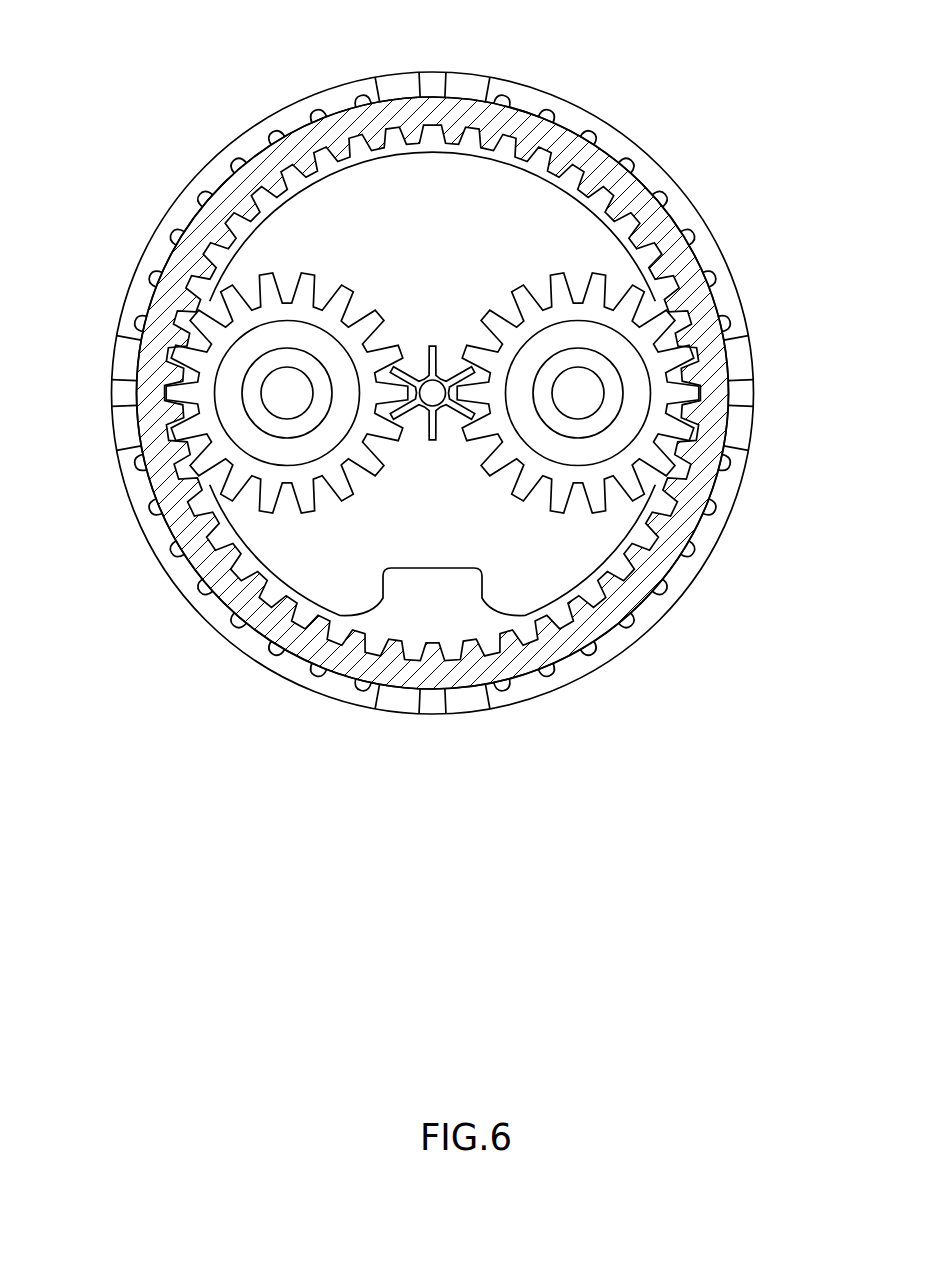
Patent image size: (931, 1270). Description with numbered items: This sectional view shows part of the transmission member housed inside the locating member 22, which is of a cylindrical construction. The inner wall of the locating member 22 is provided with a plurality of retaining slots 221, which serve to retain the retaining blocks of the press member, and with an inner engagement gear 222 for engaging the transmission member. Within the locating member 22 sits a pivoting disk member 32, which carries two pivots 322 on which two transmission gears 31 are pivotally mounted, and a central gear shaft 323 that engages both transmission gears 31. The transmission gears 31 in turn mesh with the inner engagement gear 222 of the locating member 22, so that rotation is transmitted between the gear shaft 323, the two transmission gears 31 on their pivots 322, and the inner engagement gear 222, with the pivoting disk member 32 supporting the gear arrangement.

The locating member 22 is at (210, 167).
The retaining slots 221 is at (200, 196).
The inner engagement gear 222 is at (440, 142).
The transmission gears 31 is at (301, 468).
The pivoting disk members 32 is at (548, 540).
The pivots 322 is at (585, 393).
The gear shaft 323 is at (436, 356).